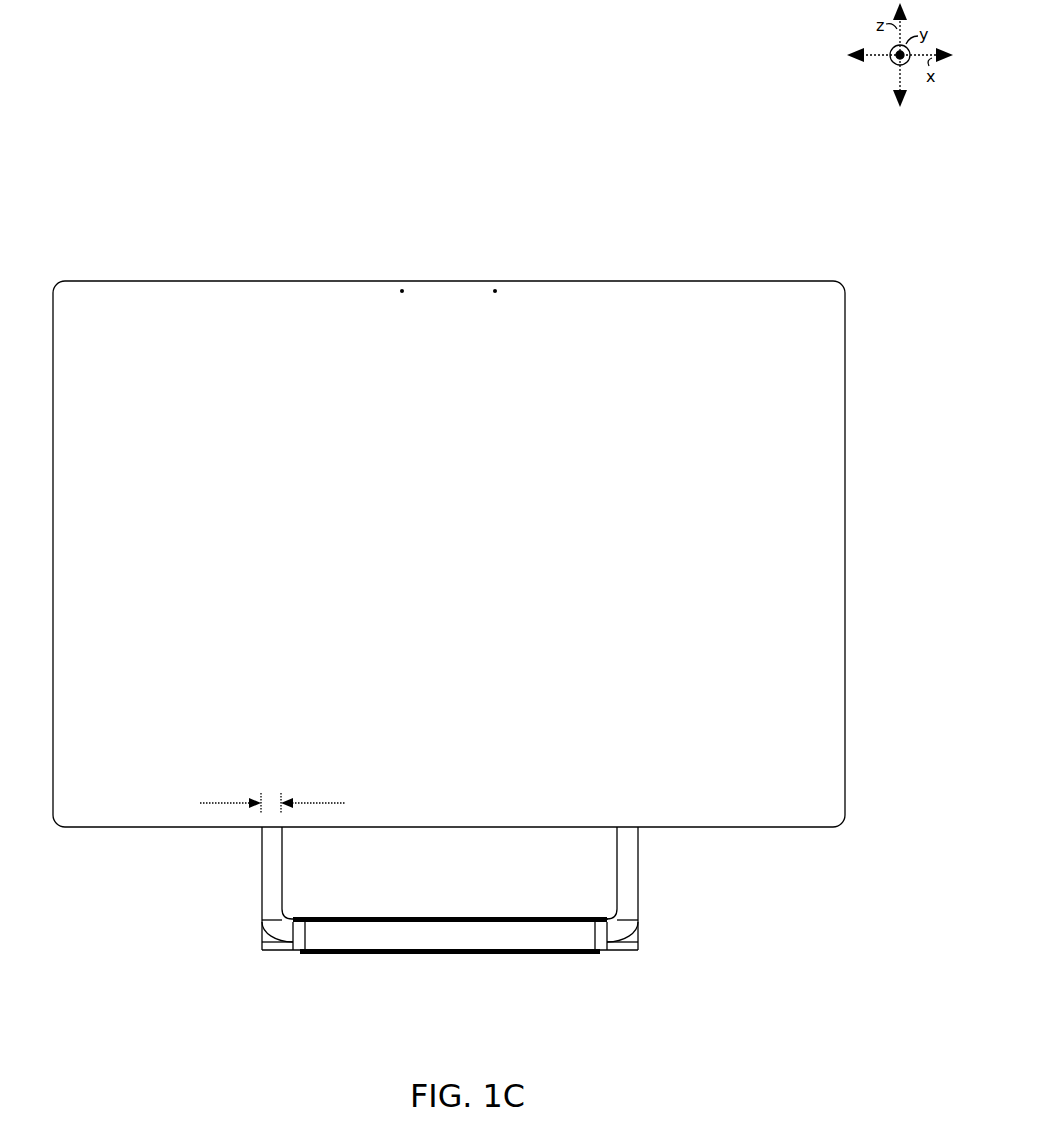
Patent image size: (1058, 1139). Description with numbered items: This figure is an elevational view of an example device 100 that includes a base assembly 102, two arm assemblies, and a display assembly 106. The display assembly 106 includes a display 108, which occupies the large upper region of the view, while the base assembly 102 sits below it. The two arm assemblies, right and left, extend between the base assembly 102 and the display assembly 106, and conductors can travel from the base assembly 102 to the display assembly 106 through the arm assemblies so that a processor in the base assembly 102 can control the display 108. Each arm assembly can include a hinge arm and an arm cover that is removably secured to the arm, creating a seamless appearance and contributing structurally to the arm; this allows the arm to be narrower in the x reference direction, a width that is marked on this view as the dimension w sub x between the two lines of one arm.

The device 100 is at (586, 206).
The base assembly 102 is at (252, 958).
The display assembly 106 is at (206, 272).
The display 108 is at (518, 552).